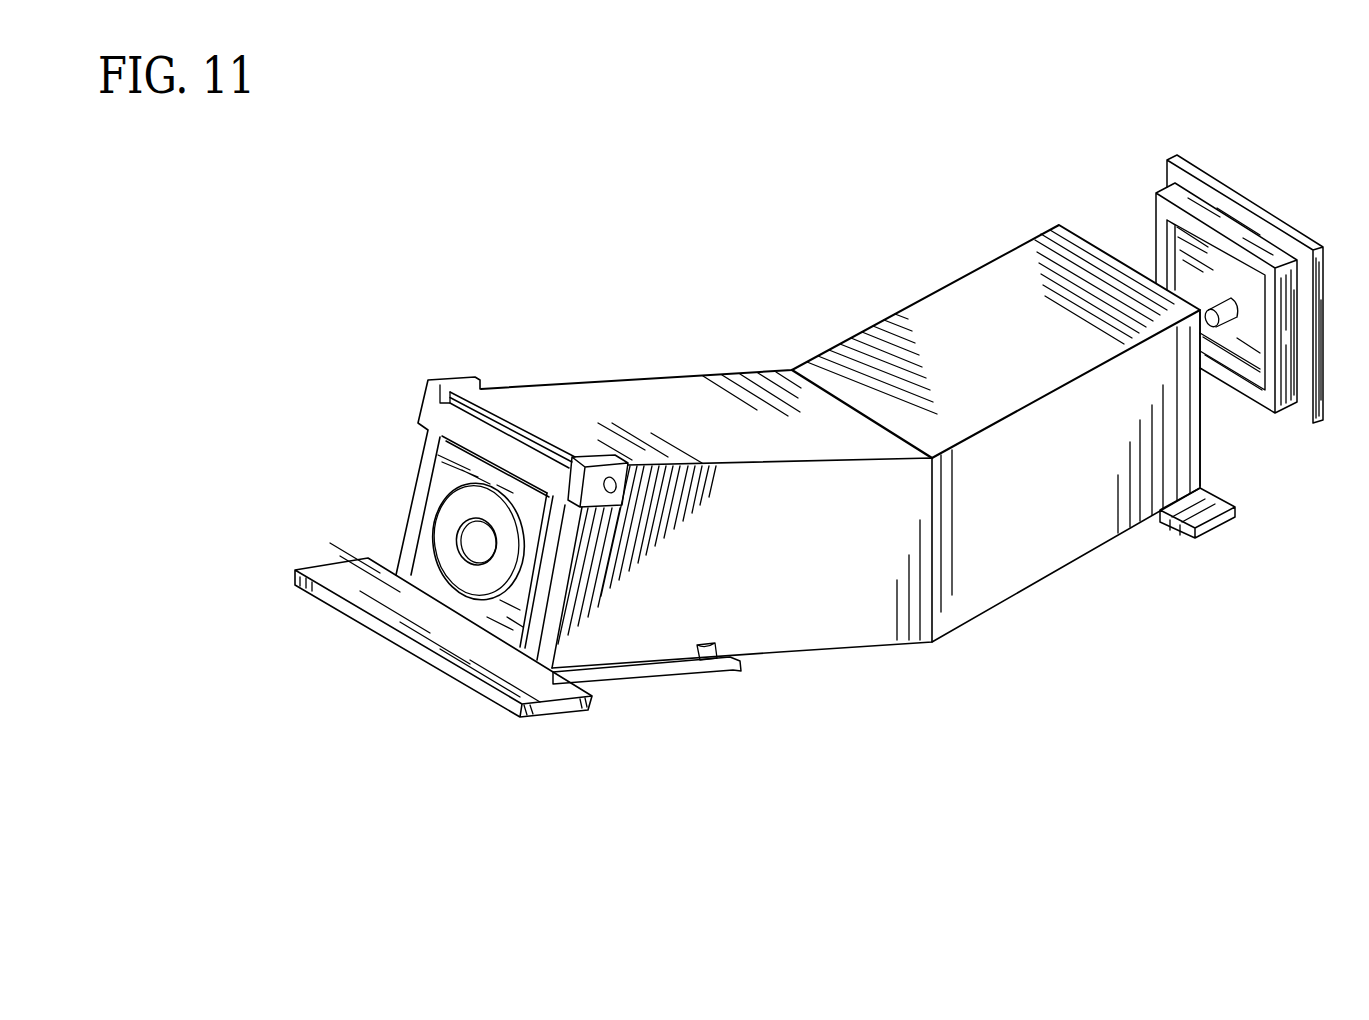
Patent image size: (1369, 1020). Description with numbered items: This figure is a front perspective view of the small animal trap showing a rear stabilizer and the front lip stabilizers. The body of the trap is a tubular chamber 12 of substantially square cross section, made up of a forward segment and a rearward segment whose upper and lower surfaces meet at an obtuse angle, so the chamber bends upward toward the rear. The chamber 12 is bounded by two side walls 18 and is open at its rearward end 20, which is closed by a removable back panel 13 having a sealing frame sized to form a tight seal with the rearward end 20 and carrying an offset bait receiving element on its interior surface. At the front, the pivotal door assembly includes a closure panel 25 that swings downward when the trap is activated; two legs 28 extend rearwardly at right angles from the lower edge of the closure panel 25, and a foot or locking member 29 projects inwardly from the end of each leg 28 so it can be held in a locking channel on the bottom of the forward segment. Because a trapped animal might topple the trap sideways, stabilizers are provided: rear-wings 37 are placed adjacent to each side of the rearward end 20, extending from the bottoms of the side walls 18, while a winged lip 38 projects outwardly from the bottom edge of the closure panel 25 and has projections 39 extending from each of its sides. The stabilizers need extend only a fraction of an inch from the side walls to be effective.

The chamber 12 is at (1045, 565).
The removable back panel 13 is at (1276, 179).
The side walls 18 is at (867, 540).
The rearward end 20 is at (1210, 417).
The closure panel 25 is at (427, 577).
The legs 28 is at (643, 672).
The locking member 29 is at (717, 660).
The rear-wings 37 is at (1217, 520).
The winged lip 38 is at (393, 633).
The projections 39 is at (295, 567).